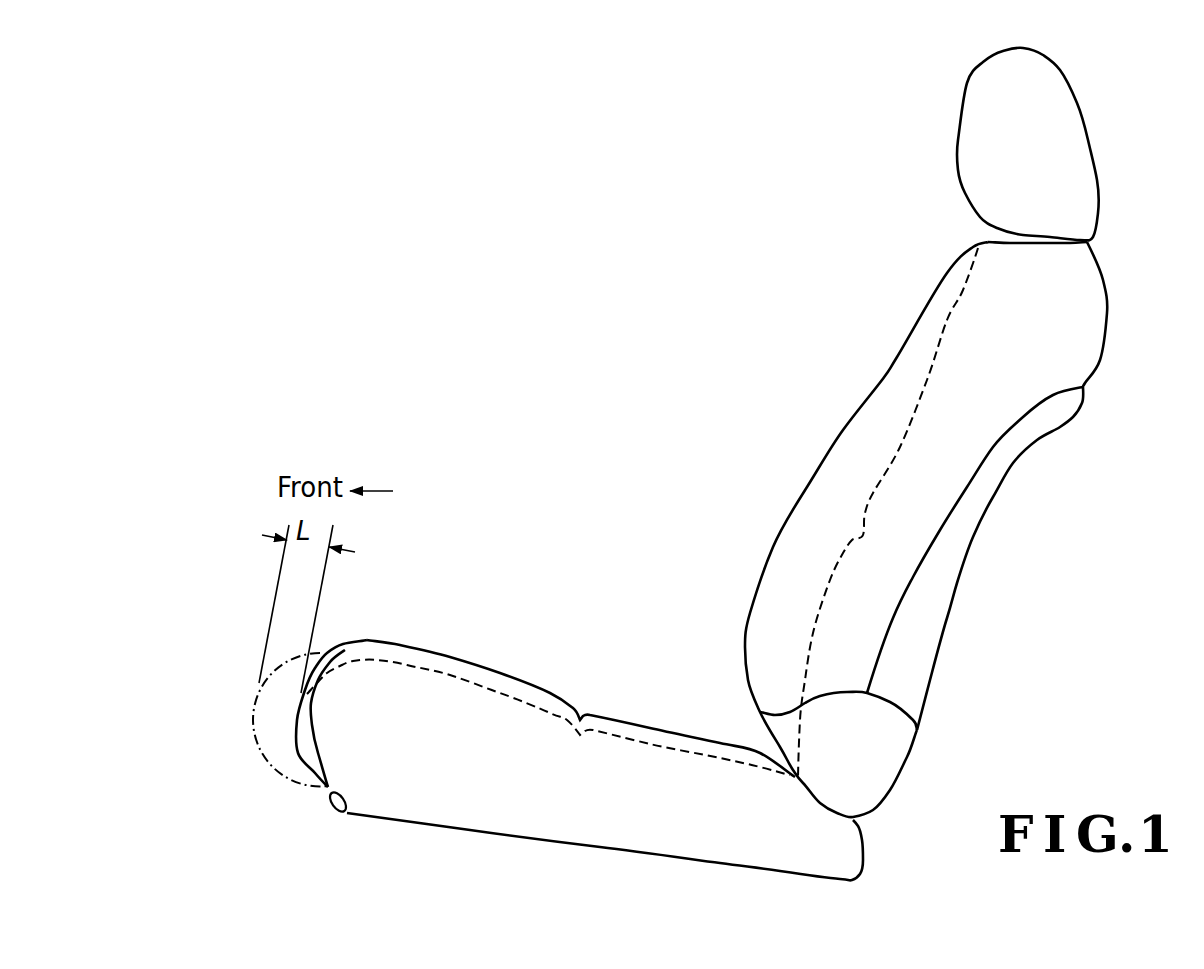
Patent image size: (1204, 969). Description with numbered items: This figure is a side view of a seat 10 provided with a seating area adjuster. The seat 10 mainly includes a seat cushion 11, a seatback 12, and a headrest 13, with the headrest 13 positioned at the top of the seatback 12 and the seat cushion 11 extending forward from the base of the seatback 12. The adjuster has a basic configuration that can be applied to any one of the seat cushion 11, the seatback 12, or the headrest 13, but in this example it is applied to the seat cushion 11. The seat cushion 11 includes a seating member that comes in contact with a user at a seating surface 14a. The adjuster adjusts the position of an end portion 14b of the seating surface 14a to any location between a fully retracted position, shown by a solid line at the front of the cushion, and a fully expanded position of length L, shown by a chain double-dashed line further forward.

The seat 10 is at (737, 380).
The seat cushion 11 is at (588, 690).
The seatback 12 is at (893, 337).
The headrest 13 is at (953, 173).
The seating surface 14a is at (400, 668).
The end portion 14b is at (293, 722).